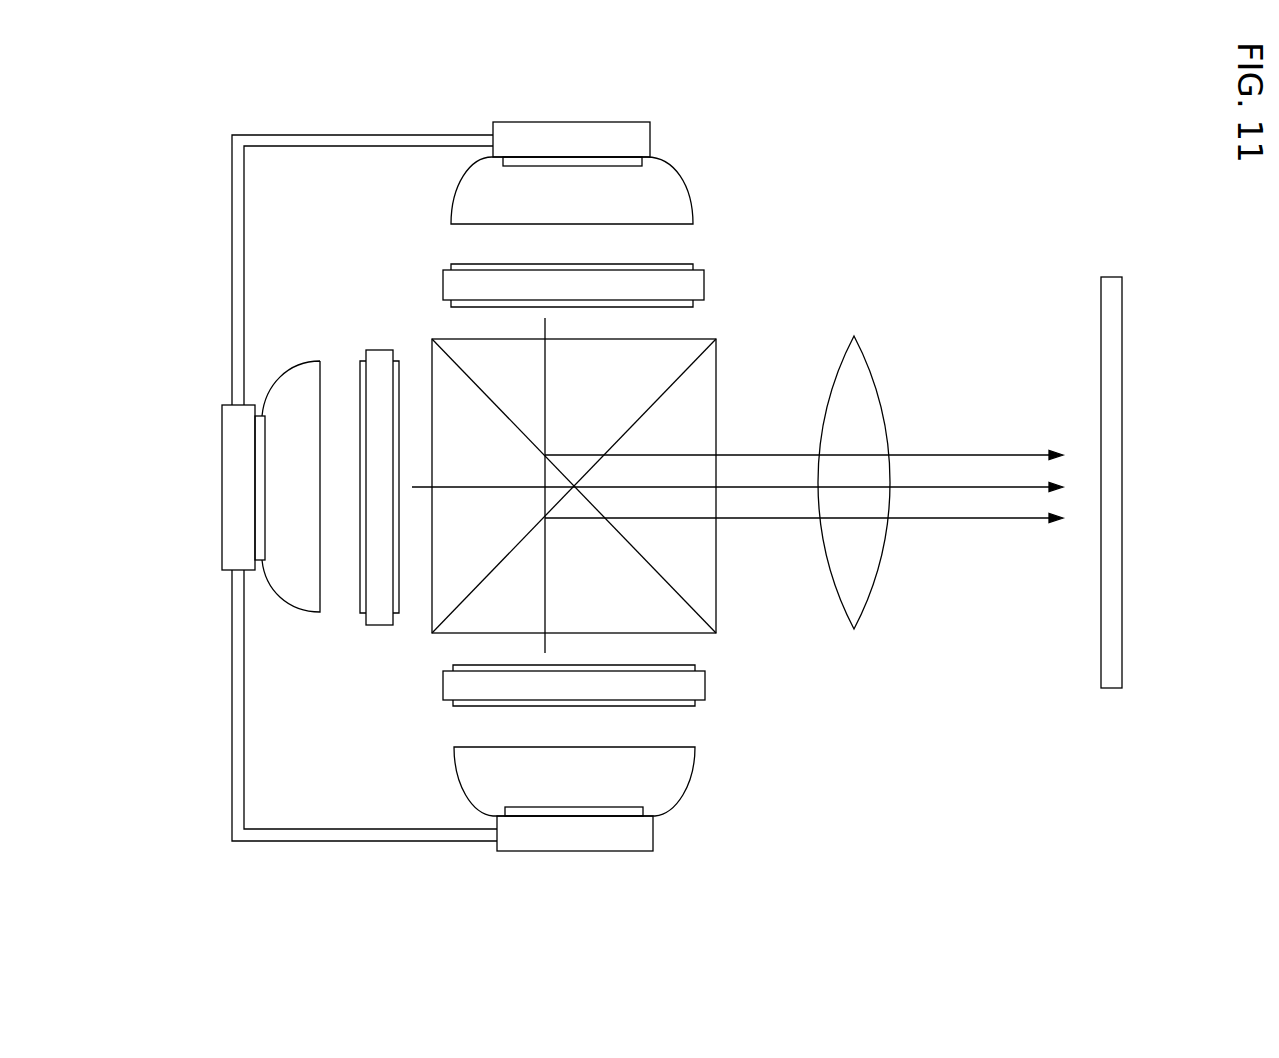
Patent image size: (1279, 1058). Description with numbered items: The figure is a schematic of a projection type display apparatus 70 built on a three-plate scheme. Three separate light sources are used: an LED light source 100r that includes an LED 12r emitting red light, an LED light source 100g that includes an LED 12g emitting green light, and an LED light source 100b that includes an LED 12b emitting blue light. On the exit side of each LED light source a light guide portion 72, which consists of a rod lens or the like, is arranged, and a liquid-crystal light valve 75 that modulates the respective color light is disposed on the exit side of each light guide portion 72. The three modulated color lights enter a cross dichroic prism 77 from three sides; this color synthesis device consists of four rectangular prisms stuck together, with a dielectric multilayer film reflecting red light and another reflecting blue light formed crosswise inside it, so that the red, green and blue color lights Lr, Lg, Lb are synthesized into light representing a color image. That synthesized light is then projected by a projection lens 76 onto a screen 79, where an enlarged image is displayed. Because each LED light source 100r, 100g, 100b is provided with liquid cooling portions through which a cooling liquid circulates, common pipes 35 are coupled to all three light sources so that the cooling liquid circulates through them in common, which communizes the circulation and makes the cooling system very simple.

The projection type display apparatus 70 is at (878, 193).
The common pipes 35 is at (278, 135).
The LED light source 100r is at (635, 110).
The LED 12r is at (633, 168).
The light guide portion 72 is at (462, 192).
The liquid-crystal light valve 75 is at (705, 286).
The LED light source 100g is at (208, 551).
The LED 12g is at (264, 550).
The cross dichroic prism 77 is at (438, 605).
The red color light Lr is at (547, 375).
The green color light Lg is at (481, 485).
The blue color light Lb is at (547, 589).
The projection lens 76 is at (890, 417).
The screen 79 is at (1122, 398).
The LED 12b is at (643, 810).
The LED light source 100b is at (637, 865).